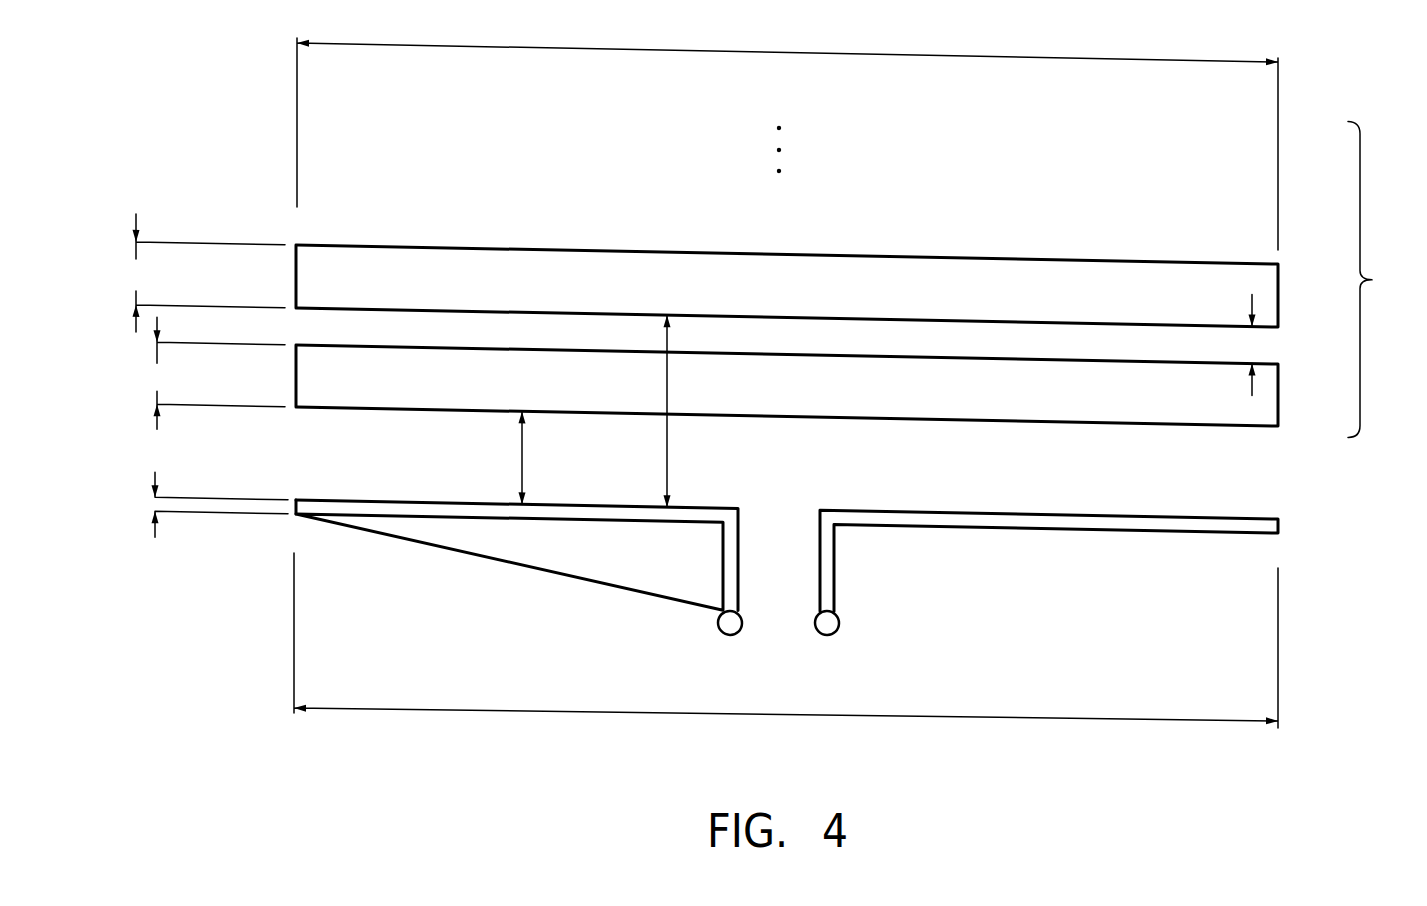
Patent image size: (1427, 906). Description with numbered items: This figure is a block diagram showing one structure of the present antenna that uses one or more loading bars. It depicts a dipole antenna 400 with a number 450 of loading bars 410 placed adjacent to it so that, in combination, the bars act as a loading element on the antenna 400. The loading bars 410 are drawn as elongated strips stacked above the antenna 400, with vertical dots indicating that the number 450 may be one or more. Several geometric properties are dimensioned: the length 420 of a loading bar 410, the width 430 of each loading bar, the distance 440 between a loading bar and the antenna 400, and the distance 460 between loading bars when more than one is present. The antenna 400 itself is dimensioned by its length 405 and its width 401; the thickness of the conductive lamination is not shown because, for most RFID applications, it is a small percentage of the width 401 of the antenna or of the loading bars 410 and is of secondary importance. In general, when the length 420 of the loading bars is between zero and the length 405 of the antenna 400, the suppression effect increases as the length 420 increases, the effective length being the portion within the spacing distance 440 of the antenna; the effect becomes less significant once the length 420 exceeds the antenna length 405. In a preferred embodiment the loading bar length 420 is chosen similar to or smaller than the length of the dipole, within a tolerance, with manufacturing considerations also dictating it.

The dipole antenna 400 is at (1263, 514).
The width of the antenna 401 is at (155, 511).
The length of the antenna 405 is at (722, 706).
The loading bar 410 is at (343, 369).
The length of a loading bar 420 is at (733, 42).
The width of a loading bar 430 is at (200, 322).
The distance between a loading bar and the antenna 440 is at (522, 453).
The number of loading bars 450 is at (825, 269).
The distance between loading bars 460 is at (1252, 327).